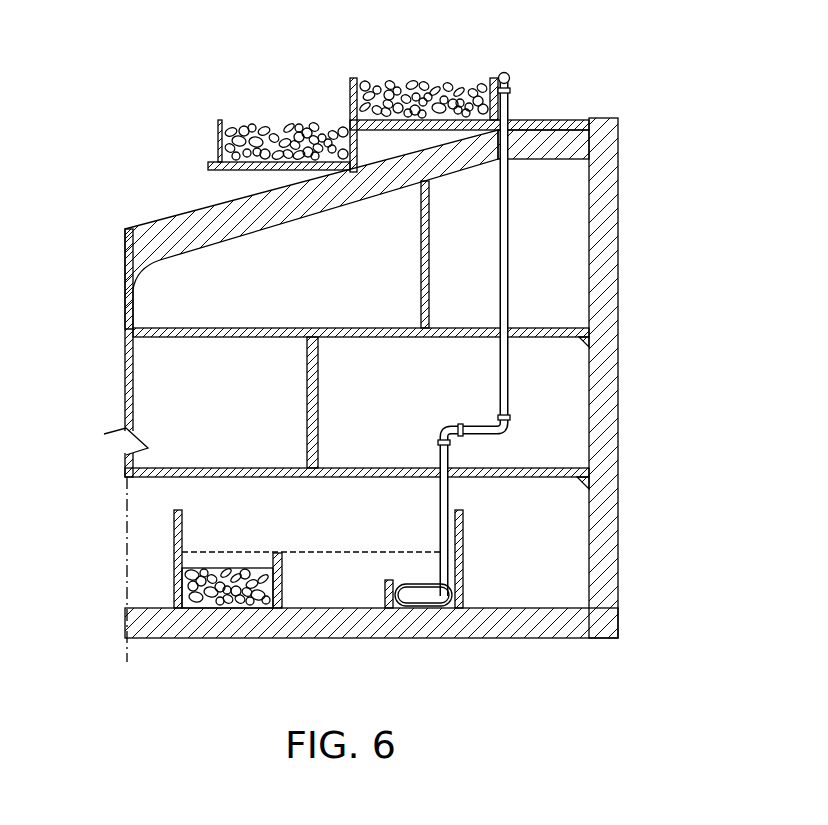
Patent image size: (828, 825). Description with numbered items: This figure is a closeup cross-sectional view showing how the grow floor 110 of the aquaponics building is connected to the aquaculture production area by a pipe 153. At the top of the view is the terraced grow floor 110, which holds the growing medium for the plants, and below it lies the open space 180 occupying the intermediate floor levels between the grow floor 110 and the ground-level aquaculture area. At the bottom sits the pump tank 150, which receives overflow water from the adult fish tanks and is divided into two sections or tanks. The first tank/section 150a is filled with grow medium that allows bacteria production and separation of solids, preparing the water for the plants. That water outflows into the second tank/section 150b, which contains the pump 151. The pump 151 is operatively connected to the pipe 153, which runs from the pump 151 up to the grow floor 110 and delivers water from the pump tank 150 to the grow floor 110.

The grow floor 110 is at (271, 124).
The open space 180 is at (594, 233).
The pipe 153 is at (455, 493).
The pump tank 150 is at (174, 551).
The first tank/section 150a is at (233, 612).
The second tank/section 150b is at (333, 613).
The pump 151 is at (424, 600).